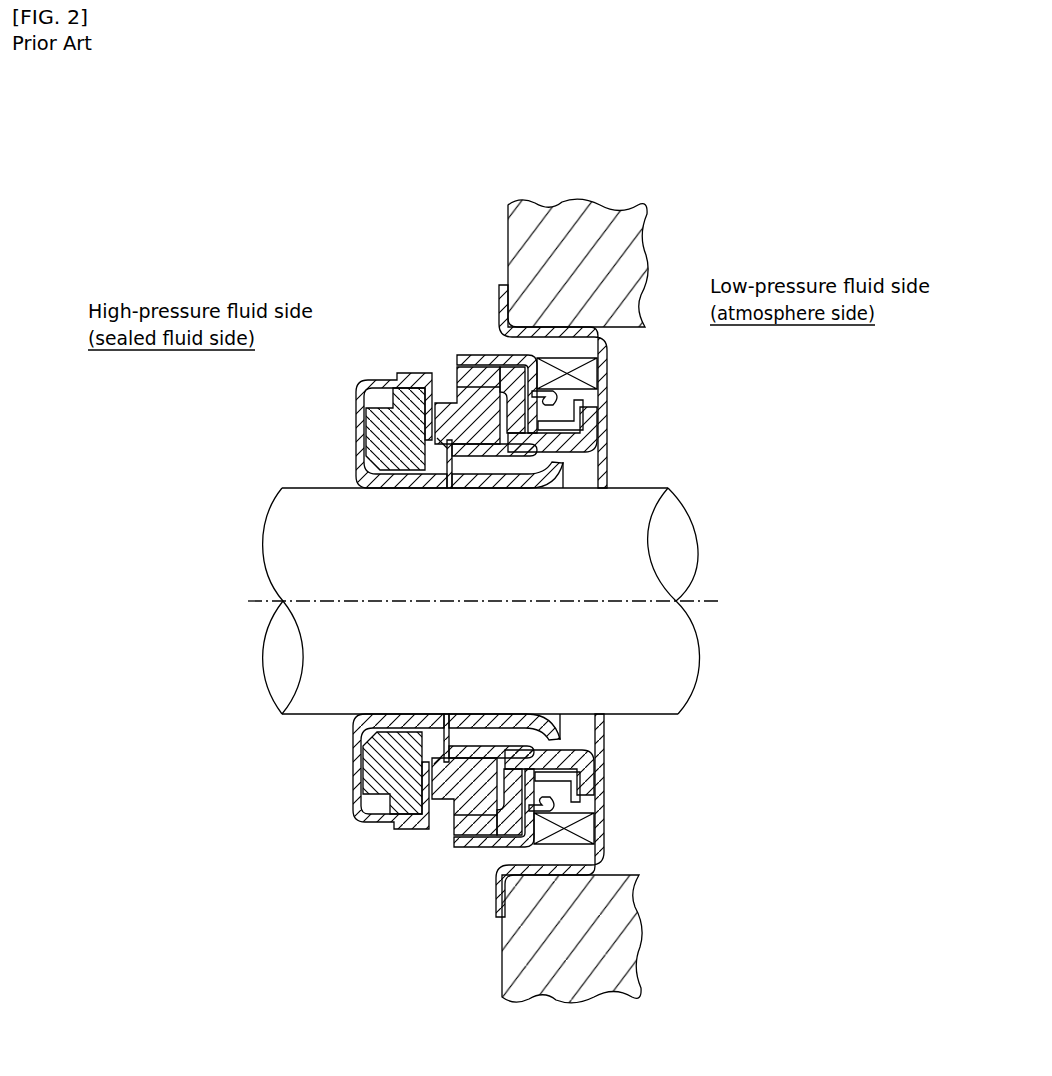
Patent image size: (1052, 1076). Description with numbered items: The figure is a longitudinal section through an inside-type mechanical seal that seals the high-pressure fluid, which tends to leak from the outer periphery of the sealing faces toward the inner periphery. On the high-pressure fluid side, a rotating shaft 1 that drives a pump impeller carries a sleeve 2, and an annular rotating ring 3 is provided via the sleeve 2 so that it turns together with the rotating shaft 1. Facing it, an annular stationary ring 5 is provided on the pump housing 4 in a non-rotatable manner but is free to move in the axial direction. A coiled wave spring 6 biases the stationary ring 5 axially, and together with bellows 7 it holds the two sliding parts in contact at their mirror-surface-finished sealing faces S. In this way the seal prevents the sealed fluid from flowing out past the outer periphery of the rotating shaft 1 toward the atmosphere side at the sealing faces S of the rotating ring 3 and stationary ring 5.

The rotating shaft 1 is at (398, 575).
The sleeve 2 is at (358, 438).
The rotating ring 3 is at (396, 388).
The pump housing 4 is at (565, 226).
The stationary ring 5 is at (452, 403).
The coiled wave spring 6 is at (588, 380).
The bellows 7 is at (503, 373).
The sealing faces S is at (448, 488).